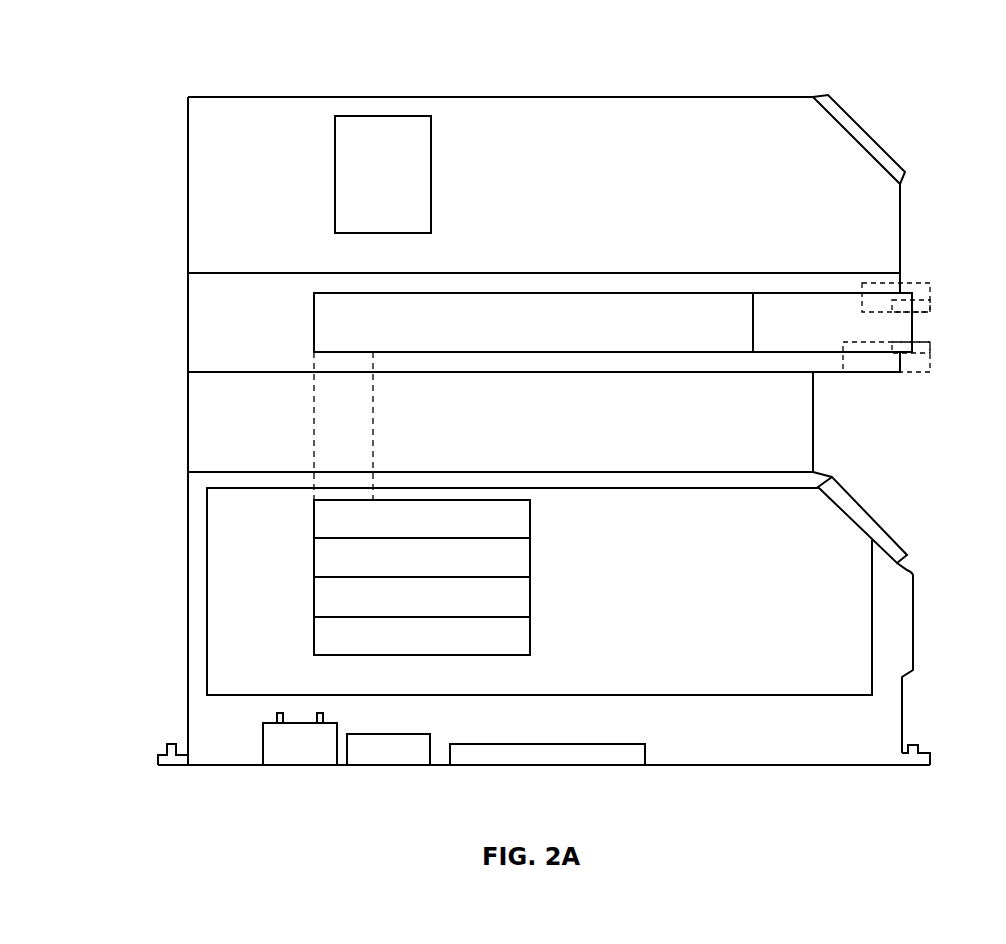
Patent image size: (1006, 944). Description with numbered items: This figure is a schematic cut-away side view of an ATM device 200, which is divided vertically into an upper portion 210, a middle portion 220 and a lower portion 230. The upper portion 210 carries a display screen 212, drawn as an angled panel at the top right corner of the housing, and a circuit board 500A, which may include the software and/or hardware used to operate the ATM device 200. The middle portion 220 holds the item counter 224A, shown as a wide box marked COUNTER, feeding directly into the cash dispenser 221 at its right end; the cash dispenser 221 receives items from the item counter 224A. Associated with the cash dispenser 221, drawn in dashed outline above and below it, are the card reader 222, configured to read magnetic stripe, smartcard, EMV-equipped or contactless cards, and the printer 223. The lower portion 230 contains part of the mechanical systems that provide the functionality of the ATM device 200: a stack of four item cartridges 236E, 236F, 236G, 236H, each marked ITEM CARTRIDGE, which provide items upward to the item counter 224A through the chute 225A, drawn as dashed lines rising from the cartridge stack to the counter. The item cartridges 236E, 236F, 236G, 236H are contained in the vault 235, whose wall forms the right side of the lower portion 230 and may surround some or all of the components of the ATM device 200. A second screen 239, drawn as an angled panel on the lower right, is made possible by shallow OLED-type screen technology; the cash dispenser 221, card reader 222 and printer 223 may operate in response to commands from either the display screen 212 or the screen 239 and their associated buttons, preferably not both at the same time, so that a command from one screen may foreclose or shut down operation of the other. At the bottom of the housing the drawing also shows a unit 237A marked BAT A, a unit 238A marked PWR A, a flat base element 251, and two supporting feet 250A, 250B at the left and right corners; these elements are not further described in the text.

The ATM device 200 is at (502, 400).
The upper portion 210 is at (188, 118).
The middle portion 220 is at (188, 315).
The lower portion 230 is at (187, 547).
The display screen 212 is at (867, 132).
The circuit board 500A is at (383, 115).
The item counter 224A is at (313, 313).
The cash dispenser 221 is at (913, 330).
The card reader 222 is at (917, 287).
The printer 223 is at (917, 353).
The chute 225A is at (313, 367).
The item cartridge 236E is at (314, 520).
The item cartridge 236F is at (314, 559).
The item cartridge 236G is at (314, 598).
The item cartridge 236H is at (314, 637).
The screen 239 is at (853, 520).
The vault 235 is at (872, 600).
The battery 237A is at (263, 738).
The power supply 238A is at (382, 734).
The base plate 251 is at (548, 743).
The left foot 250A is at (178, 766).
The right foot 250B is at (913, 767).